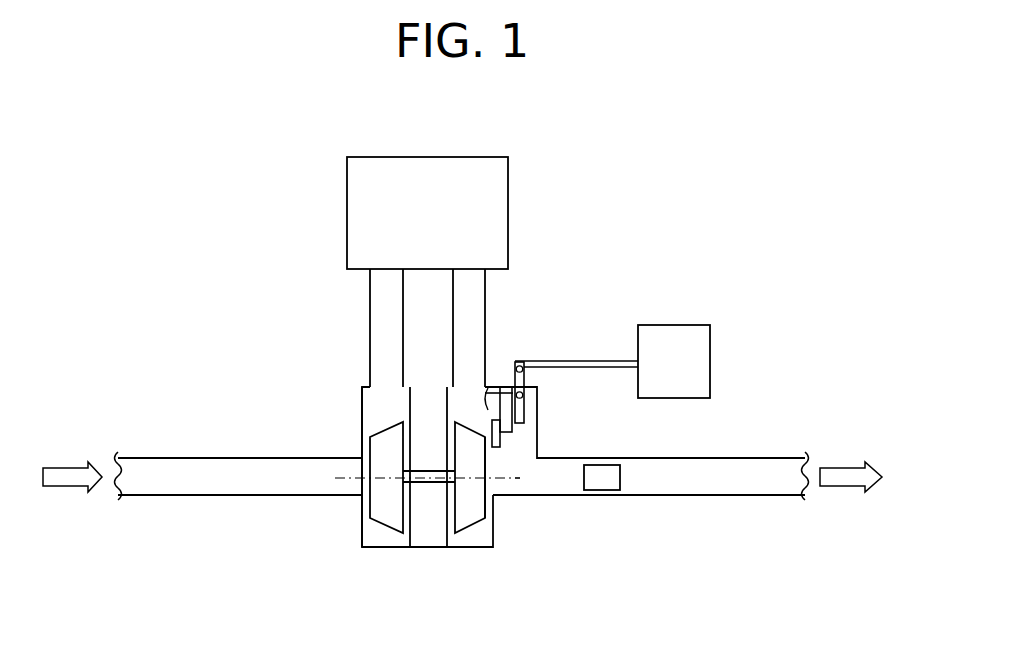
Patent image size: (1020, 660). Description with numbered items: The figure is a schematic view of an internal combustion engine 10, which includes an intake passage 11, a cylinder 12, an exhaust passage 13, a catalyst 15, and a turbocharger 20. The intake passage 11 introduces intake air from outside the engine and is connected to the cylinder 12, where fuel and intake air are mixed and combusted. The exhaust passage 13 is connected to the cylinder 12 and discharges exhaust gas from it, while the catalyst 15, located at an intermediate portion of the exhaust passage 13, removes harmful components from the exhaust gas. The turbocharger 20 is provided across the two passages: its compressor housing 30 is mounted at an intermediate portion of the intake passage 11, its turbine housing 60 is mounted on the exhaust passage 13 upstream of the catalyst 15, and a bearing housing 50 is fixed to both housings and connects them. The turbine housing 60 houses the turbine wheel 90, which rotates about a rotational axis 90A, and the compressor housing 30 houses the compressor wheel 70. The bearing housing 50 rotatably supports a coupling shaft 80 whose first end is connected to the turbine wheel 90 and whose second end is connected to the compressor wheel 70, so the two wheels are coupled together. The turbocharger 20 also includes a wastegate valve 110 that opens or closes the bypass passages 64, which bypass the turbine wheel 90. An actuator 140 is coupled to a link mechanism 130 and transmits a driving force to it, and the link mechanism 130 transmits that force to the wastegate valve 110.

The internal combustion engine 10 is at (231, 176).
The intake passage 11 is at (368, 297).
The cylinder 12 is at (456, 157).
The exhaust passage 13 is at (490, 287).
The catalyst 15 is at (603, 491).
The turbocharger 20 is at (337, 529).
The compressor housing 30 is at (362, 549).
The bearing housing 50 is at (420, 549).
The turbine housing 60 is at (478, 549).
The bypass passage 64 is at (488, 388).
The compressor wheel 70 is at (388, 549).
The coupling shaft 80 is at (430, 484).
The turbine wheel 90 is at (483, 532).
The rotational axis 90A is at (517, 480).
The wastegate valve 110 is at (521, 432).
The link mechanism 130 is at (582, 361).
The actuator 140 is at (666, 324).